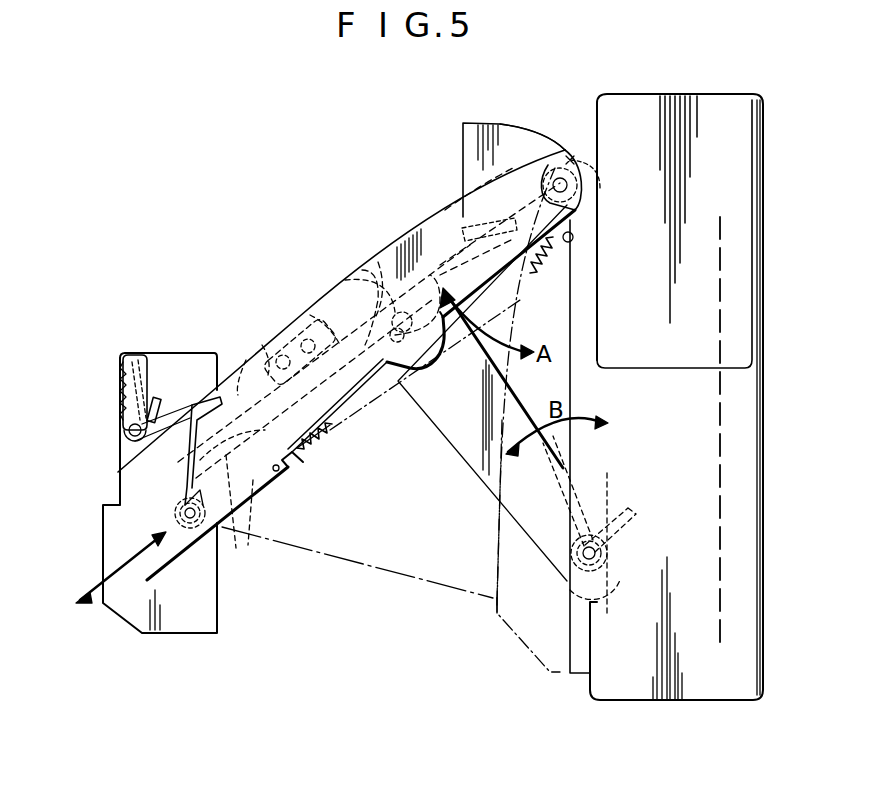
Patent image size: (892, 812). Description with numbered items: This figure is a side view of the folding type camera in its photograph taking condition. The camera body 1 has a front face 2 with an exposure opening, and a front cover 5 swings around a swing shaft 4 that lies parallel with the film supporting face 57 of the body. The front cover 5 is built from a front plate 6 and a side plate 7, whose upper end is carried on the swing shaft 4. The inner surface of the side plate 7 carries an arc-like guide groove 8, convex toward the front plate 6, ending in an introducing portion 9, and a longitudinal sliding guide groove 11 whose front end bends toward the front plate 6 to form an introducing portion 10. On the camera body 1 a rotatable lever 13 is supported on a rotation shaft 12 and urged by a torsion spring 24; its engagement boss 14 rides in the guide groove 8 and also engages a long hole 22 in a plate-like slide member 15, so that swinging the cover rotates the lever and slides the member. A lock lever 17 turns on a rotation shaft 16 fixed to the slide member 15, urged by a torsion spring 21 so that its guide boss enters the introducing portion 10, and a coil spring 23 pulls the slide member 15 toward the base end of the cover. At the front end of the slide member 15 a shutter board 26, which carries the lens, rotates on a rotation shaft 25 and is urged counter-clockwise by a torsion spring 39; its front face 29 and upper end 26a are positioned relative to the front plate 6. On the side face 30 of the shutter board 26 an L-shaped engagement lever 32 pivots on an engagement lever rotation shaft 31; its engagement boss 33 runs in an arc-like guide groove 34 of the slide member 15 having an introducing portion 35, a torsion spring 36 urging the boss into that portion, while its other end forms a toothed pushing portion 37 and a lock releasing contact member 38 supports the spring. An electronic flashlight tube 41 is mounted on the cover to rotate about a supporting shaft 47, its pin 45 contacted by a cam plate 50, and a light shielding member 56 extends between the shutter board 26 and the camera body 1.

The camera body 1 is at (688, 92).
The front face 2 is at (597, 132).
The swing shaft 4 is at (569, 187).
The front cover 5 is at (415, 207).
The front plate 6 is at (362, 270).
The side plate 7 is at (443, 215).
The guide groove 8 is at (510, 300).
The introducing portion 9 is at (425, 356).
The introducing portion 10 is at (264, 345).
The sliding guide groove 11 is at (348, 405).
The rotation shaft 12 is at (612, 562).
The rotatable lever 13 is at (476, 479).
The engagement boss 14 is at (432, 362).
The slide member 15 is at (256, 508).
The rotation shaft 16 is at (340, 428).
The lock lever 17 is at (278, 336).
The torsion spring 21 is at (310, 315).
The long hole 22 is at (345, 280).
The coil spring 23 is at (308, 454).
The torsion spring 24 is at (630, 530).
The rotation shaft 25 is at (188, 530).
The shutter board 26 is at (102, 551).
The upper end 26a is at (192, 353).
The front face 29 is at (118, 398).
The side face 30 is at (160, 355).
The engagement lever rotation shaft 31 is at (126, 436).
The engagement lever 32 is at (123, 353).
The engagement boss 33 is at (246, 360).
The guide groove 34 is at (254, 503).
The introducing portion 35 is at (182, 451).
The torsion spring 36 is at (147, 358).
The toothed pushing portion 37 is at (120, 398).
The lock releasing contact member 38 is at (164, 402).
The torsion spring 39 is at (233, 548).
The electronic flashlight tube 41 is at (484, 124).
The pin 45 is at (480, 220).
The supporting shaft 47 is at (580, 160).
The cam plate 50 is at (378, 262).
The light shielding member 56 is at (422, 578).
The film supporting face 57 is at (721, 415).